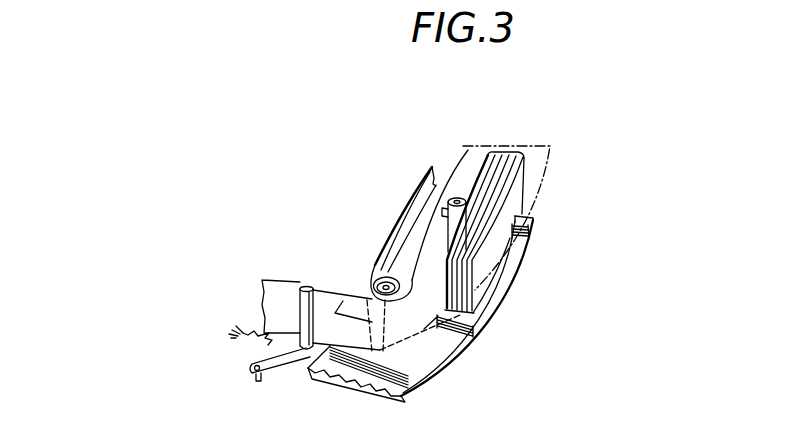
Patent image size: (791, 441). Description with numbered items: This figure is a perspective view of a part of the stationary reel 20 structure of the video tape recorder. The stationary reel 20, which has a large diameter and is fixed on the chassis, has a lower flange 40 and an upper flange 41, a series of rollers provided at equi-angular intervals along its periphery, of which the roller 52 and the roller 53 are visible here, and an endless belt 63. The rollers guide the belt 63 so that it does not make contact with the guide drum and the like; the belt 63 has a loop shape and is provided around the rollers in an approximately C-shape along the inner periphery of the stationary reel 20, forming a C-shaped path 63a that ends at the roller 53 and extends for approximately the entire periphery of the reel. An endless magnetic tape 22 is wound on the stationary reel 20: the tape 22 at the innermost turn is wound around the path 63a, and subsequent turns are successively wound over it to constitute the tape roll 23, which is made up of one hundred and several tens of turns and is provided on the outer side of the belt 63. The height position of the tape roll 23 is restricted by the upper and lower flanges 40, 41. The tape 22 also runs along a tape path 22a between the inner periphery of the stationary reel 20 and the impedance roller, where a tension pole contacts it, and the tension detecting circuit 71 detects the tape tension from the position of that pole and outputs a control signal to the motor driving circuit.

The stationary reel 20 is at (545, 237).
The endless magnetic tape 22 is at (333, 305).
The tape path 22a is at (276, 279).
The tape roll 23 is at (518, 153).
The lower flange 40 is at (483, 325).
The upper flange 41 is at (550, 165).
The roller 52 is at (455, 192).
The roller 53 is at (380, 281).
The endless belt 63 is at (412, 180).
The C-shaped path 63a is at (468, 150).
The tension detecting circuit 71 is at (311, 287).